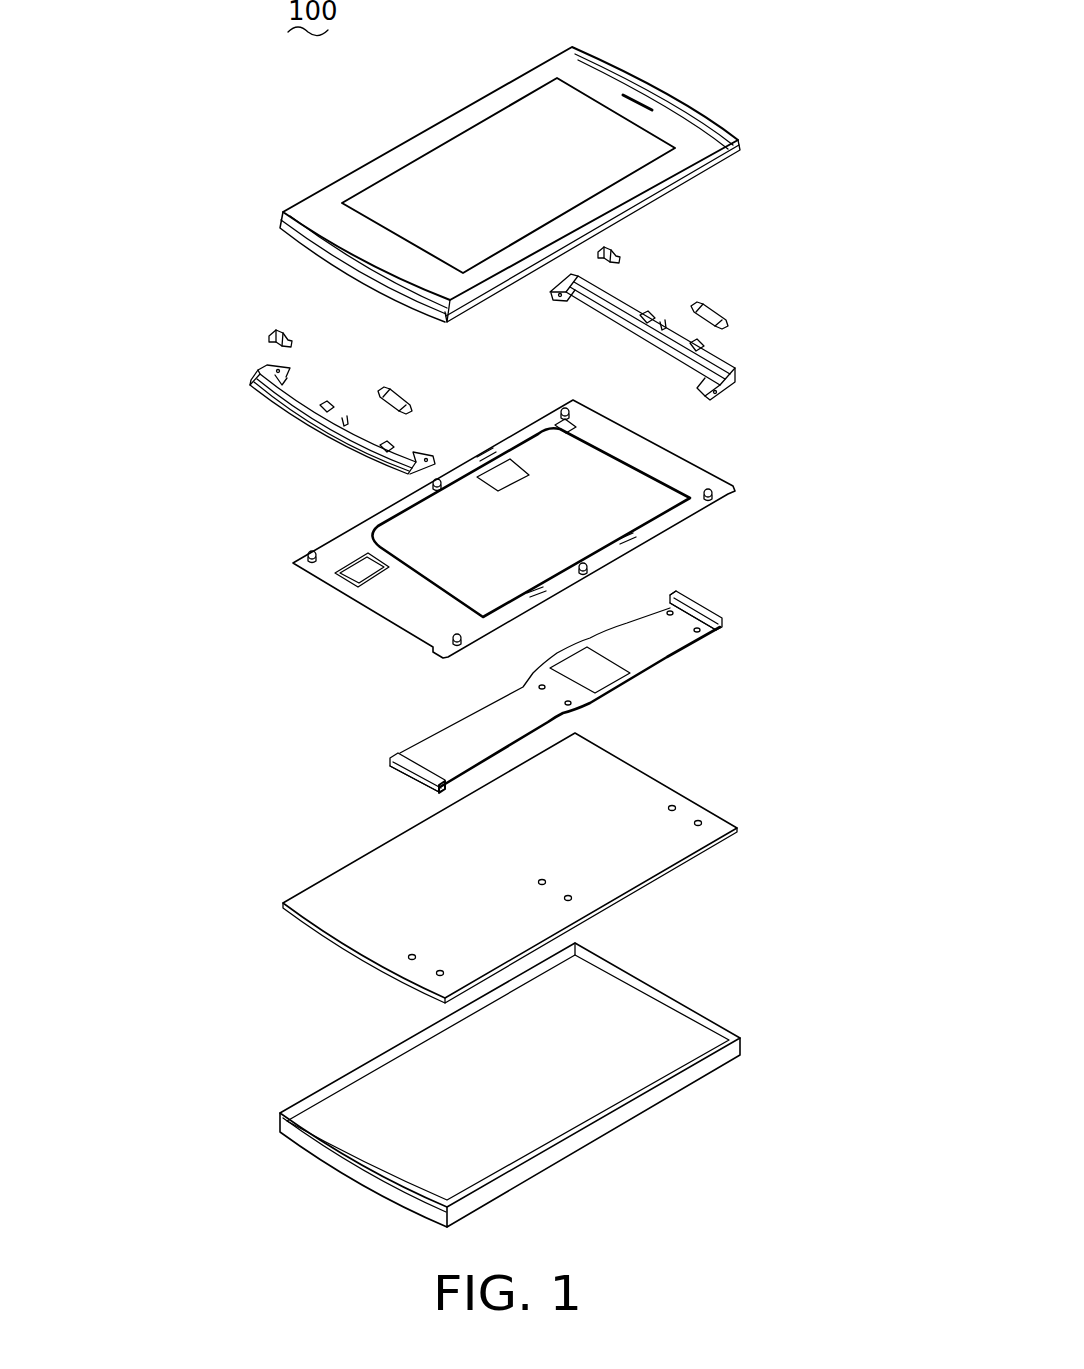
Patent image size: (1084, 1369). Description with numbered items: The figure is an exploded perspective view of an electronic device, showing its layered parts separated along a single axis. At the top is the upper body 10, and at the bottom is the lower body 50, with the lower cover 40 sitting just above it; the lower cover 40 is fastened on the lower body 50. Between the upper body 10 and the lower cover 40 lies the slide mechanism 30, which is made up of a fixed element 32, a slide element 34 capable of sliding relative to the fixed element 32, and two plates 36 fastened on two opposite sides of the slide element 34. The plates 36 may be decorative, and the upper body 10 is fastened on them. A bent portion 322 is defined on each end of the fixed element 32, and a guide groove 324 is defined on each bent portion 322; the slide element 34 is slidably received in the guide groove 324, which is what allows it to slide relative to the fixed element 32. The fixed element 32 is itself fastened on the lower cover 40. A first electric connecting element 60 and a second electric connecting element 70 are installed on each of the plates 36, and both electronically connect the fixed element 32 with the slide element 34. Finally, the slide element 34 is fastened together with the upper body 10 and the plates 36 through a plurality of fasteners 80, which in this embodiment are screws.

The upper body 10 is at (667, 120).
The slide mechanism 30 is at (799, 343).
The fixed element 32 is at (680, 627).
The bent portion 322 is at (396, 757).
The guide groove 324 is at (438, 791).
The slide element 34 is at (683, 477).
The plate 36 is at (677, 340).
The lower cover 40 is at (633, 793).
The lower body 50 is at (667, 1023).
The first electric connecting element 60 is at (717, 310).
The second electric connecting element 70 is at (620, 250).
The fastener 80 is at (563, 408).